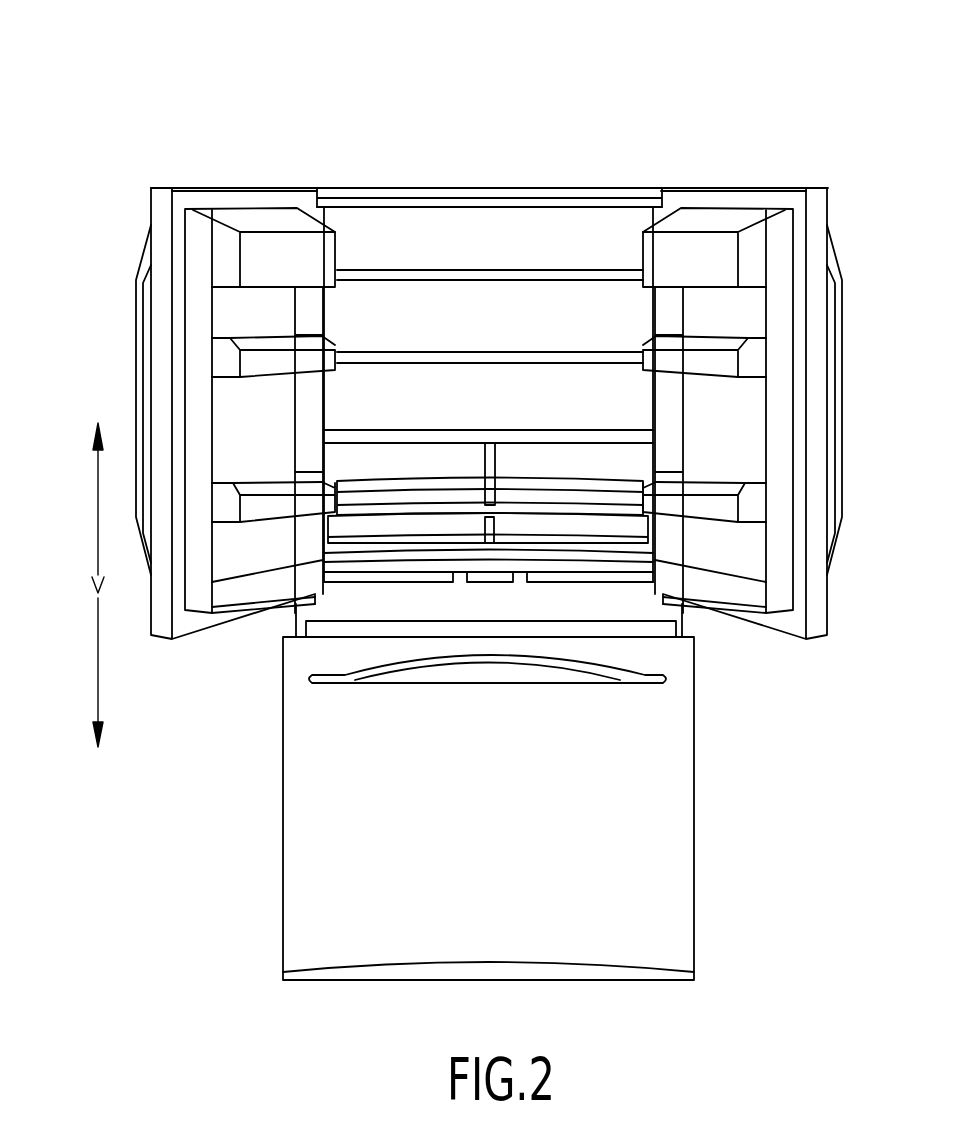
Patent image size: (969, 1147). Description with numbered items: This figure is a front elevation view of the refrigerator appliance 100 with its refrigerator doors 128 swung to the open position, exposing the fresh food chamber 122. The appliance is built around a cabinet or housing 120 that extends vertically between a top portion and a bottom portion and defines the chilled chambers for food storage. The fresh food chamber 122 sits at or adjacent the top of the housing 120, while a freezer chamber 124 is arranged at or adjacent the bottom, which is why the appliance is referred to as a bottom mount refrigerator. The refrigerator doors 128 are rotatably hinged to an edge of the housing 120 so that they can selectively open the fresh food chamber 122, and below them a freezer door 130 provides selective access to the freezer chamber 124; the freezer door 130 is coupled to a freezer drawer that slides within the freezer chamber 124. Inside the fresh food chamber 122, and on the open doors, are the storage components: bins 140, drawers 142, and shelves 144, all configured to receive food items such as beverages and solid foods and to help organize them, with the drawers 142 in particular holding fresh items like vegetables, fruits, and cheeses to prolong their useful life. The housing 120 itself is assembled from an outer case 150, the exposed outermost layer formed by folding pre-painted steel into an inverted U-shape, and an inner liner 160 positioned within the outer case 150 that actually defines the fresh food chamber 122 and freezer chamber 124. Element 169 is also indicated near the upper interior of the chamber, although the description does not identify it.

The refrigerator appliance 100 is at (467, 496).
The housing 120 is at (687, 622).
The fresh food chamber 122 is at (485, 229).
The freezer chamber 124 is at (632, 846).
The refrigerator doors 128 is at (246, 197).
The freezer door 130 is at (323, 826).
The bins 140 is at (267, 500).
The drawers 142 is at (520, 488).
The shelves 144 is at (500, 275).
The outer case 150 is at (547, 190).
The inner liner 160 is at (590, 197).
The interior back wall 169 is at (444, 235).